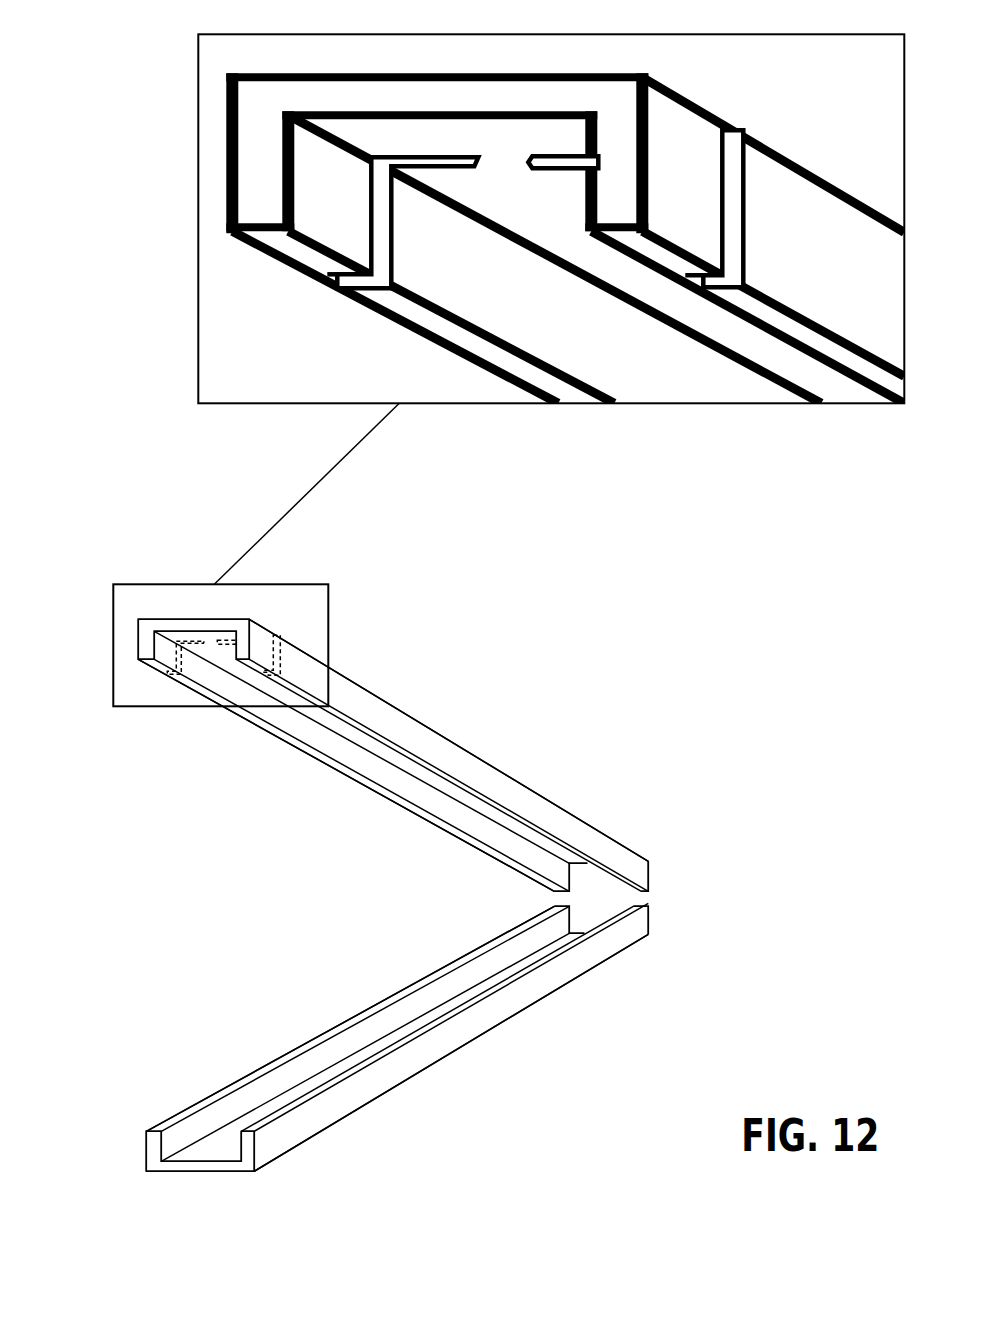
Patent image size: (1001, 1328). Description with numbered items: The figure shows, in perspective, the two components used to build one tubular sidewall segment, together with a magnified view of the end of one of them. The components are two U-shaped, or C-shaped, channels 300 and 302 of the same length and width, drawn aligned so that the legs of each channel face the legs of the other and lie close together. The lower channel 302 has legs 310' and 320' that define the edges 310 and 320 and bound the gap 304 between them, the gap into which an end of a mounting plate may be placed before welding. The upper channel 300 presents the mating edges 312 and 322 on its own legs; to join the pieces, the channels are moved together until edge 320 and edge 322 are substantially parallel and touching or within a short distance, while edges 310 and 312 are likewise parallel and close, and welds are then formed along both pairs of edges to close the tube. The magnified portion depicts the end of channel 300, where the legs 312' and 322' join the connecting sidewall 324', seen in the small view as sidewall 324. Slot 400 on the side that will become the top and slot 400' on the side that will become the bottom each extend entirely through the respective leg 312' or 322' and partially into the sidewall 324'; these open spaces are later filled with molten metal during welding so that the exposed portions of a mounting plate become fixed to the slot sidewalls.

The channel 300 is at (478, 709).
The channel 302 is at (418, 1120).
The gap 304 is at (208, 1159).
The edge 310 is at (397, 1038).
The leg 310' is at (307, 1043).
The edge 312 is at (242, 729).
The leg 312' is at (523, 240).
The edge 320 is at (560, 816).
The leg 320' is at (254, 1173).
The edge 322 is at (452, 755).
The leg 322' is at (744, 238).
The sidewall 324 is at (362, 761).
The sidewall 324' is at (420, 238).
The slot 400 is at (322, 415).
The slot 400' is at (534, 366).